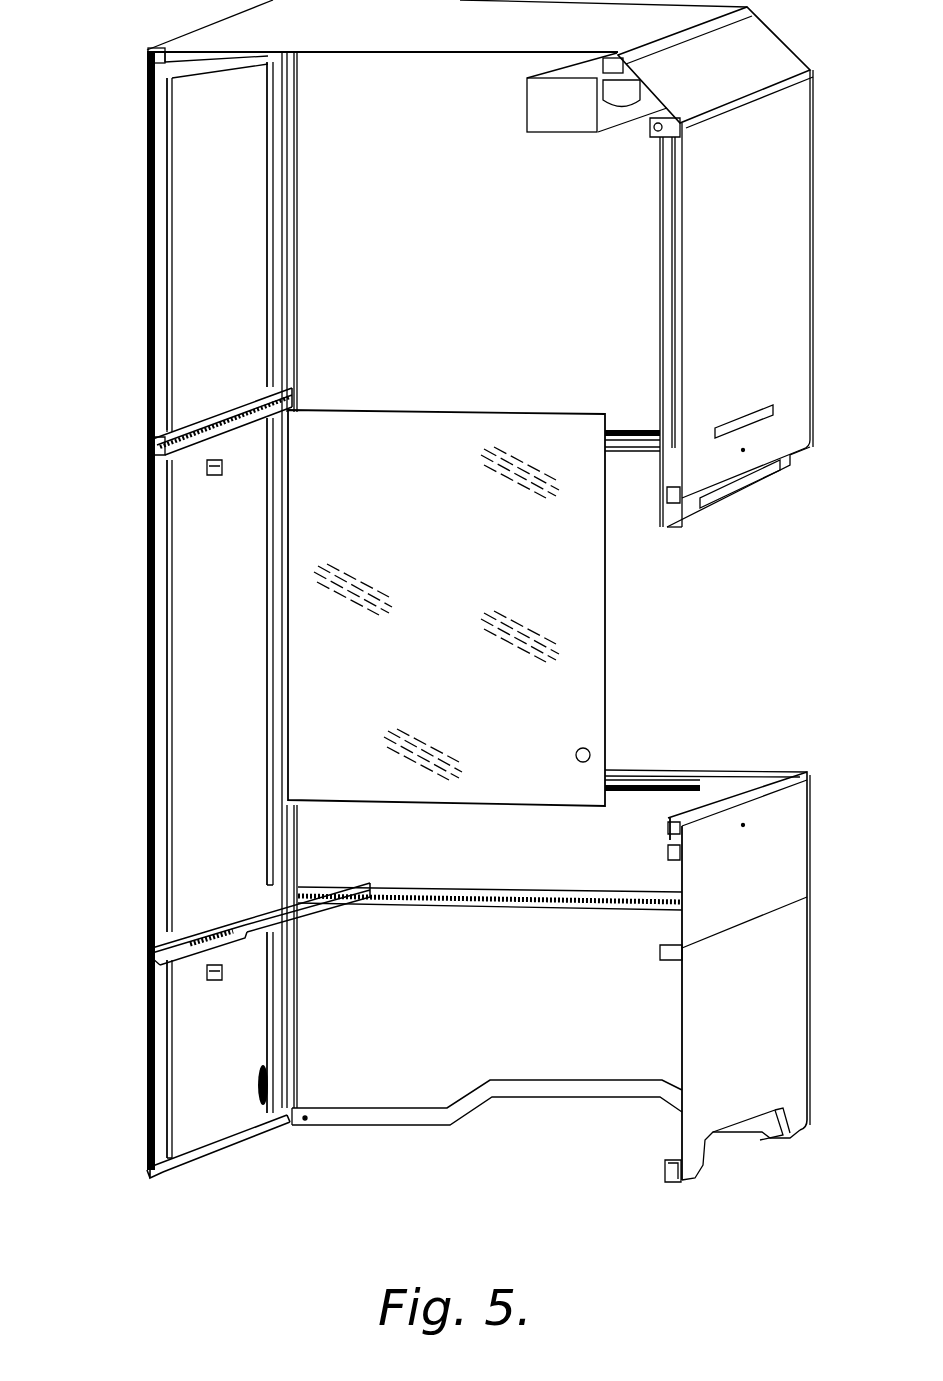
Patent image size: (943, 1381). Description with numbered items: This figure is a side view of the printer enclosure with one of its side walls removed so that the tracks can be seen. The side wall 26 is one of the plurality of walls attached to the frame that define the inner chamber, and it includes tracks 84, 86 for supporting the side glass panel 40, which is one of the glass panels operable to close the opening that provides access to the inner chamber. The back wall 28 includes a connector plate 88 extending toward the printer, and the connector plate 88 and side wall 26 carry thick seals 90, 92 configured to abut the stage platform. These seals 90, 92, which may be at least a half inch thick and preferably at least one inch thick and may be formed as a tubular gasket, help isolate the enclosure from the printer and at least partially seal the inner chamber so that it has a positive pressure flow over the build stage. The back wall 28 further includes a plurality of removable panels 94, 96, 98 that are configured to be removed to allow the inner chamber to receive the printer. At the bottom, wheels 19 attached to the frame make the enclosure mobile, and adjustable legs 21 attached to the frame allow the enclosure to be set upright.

The side wall 26 is at (438, 105).
The back wall 28 is at (198, 668).
The removable panel 94 is at (195, 205).
The removable panel 96 is at (192, 563).
The removable panel 98 is at (200, 1033).
The adjustable leg 21 is at (288, 1125).
The wheel 19 is at (302, 1128).
The glass panel 40 is at (592, 600).
The track 84 is at (642, 434).
The track 86 is at (664, 783).
The seal 92 is at (492, 898).
The connector plate 88 is at (207, 940).
The seal 90 is at (325, 905).